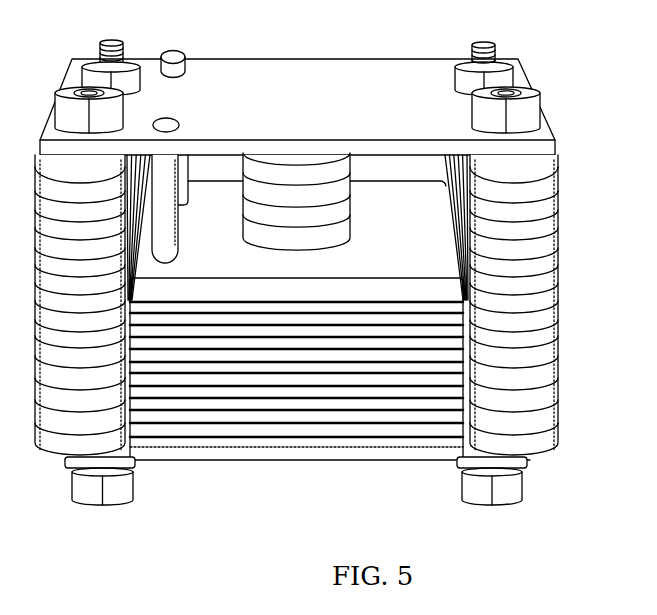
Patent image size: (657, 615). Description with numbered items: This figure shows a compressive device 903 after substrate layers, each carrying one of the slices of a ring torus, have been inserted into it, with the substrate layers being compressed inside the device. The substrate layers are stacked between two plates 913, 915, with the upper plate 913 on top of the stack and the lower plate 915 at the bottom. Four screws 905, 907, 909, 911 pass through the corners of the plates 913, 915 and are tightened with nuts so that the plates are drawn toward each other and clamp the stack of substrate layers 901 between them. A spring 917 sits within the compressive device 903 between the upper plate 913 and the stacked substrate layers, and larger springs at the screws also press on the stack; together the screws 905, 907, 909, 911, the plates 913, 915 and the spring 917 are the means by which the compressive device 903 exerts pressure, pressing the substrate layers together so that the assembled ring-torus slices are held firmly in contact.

The stack of plates 901 is at (232, 382).
The compressive device 903 is at (595, 45).
The screw 905 is at (107, 42).
The screw 907 is at (78, 92).
The screw 909 is at (488, 42).
The screw 911 is at (512, 92).
The plate 913 is at (257, 85).
The plate 915 is at (347, 455).
The spring 917 is at (313, 177).